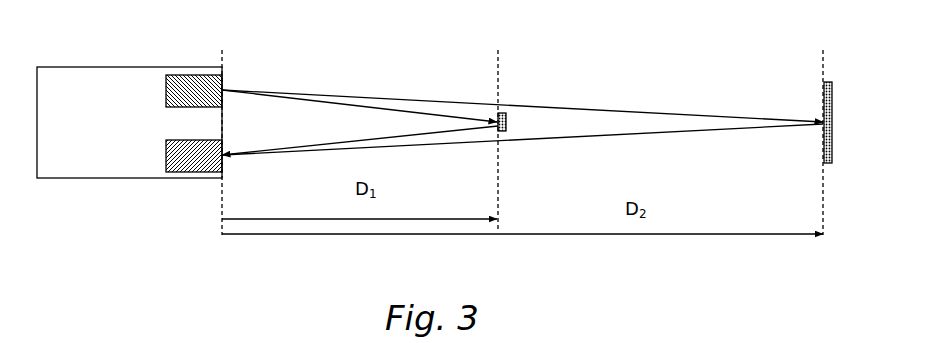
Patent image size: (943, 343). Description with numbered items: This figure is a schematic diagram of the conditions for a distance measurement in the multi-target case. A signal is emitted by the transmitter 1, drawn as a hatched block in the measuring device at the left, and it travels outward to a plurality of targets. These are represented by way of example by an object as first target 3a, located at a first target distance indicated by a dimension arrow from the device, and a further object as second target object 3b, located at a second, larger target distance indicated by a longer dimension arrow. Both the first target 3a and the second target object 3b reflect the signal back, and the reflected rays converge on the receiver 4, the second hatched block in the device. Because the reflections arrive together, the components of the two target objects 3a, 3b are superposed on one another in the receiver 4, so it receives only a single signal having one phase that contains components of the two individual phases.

The transmitter 1 is at (203, 83).
The receiver 4 is at (187, 153).
The first target 3a is at (503, 113).
The second target object 3b is at (824, 90).